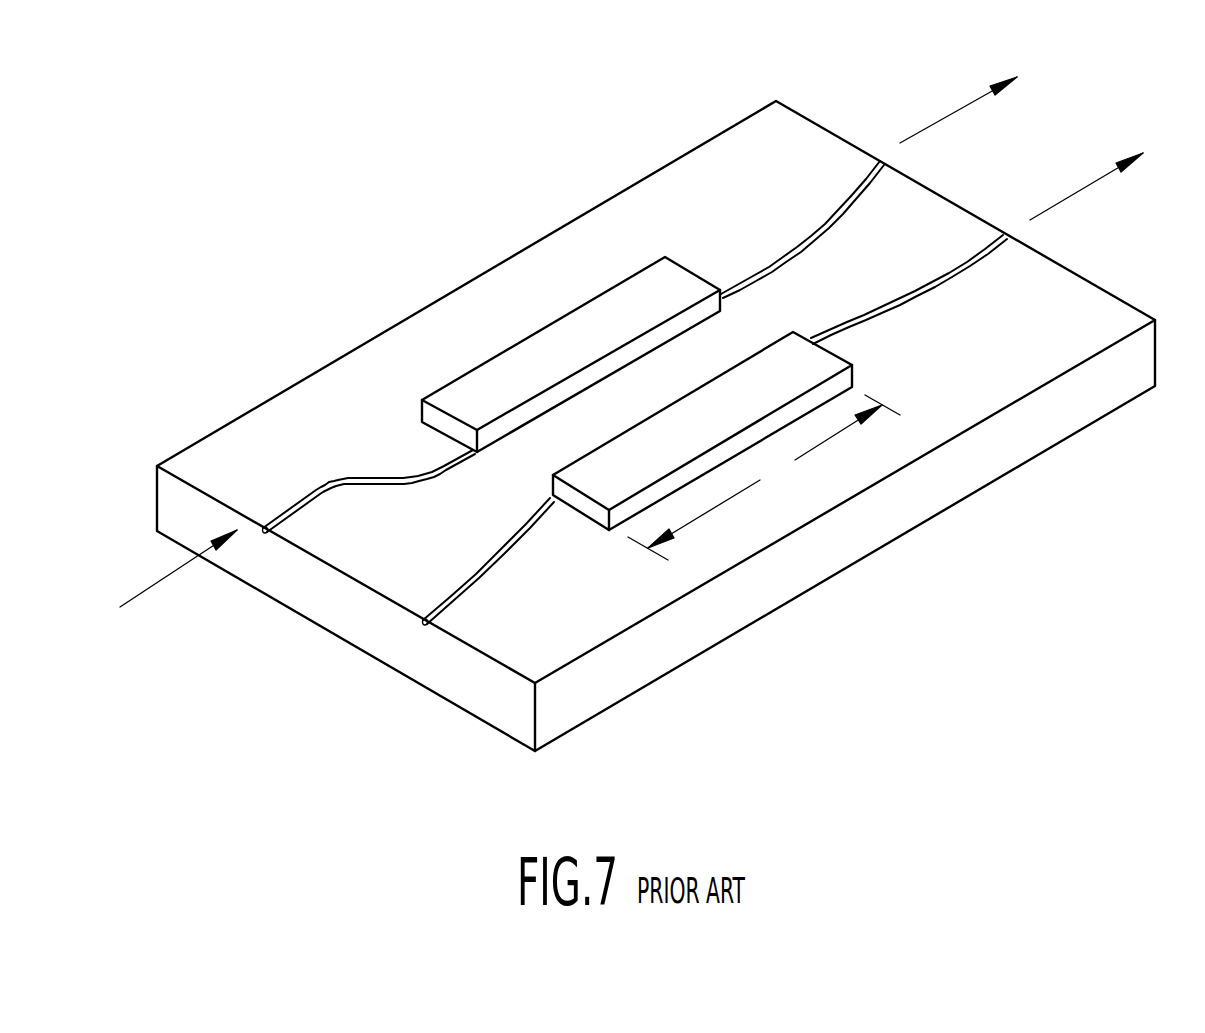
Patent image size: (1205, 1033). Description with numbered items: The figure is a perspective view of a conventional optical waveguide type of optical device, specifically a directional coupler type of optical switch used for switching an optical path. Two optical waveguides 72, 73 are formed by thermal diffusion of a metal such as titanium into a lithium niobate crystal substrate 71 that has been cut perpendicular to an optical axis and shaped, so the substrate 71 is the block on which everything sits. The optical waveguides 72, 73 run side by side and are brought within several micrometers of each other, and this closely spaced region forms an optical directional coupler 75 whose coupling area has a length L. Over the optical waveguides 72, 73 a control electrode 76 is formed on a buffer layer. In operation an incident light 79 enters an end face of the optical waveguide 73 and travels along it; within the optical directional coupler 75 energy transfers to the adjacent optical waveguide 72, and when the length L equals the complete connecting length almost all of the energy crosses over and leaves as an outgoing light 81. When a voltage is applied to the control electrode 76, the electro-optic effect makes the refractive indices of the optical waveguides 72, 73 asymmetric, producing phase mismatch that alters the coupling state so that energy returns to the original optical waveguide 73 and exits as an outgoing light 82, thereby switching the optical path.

The substrate 71 is at (972, 445).
The optical waveguide 72 is at (502, 545).
The optical waveguide 73 is at (350, 487).
The optical directional coupler 75 is at (538, 447).
The control electrode 76 is at (727, 398).
The incident light 79 is at (157, 587).
The outgoing light 81 is at (1060, 200).
The outgoing light 82 is at (935, 122).
The length of the coupling area L is at (764, 477).